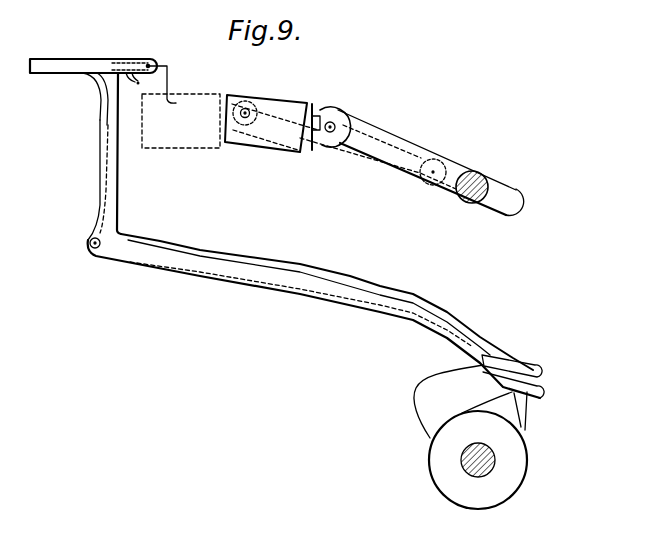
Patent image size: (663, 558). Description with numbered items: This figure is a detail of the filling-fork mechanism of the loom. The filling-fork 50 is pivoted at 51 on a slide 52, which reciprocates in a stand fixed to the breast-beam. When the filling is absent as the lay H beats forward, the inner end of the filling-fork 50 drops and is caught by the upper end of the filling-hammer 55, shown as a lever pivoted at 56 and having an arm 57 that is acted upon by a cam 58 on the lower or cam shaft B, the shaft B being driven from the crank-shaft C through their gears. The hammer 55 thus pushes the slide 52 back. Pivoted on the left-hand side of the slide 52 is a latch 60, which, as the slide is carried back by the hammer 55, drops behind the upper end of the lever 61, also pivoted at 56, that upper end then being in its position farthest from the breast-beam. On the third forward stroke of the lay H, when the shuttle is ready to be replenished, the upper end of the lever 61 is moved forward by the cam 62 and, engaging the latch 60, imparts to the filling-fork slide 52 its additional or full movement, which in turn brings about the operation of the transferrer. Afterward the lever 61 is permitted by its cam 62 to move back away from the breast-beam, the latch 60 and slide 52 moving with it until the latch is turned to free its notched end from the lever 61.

The latch 60 is at (87, 58).
The slide 52 is at (142, 60).
The pivot 51 is at (150, 65).
The filling-fork 50 is at (168, 88).
The lever 61 is at (101, 92).
The filling-hammer 55 is at (101, 160).
The pivot 56 is at (90, 244).
The arm 57 is at (419, 319).
The cam 58 is at (510, 412).
The cam 62 is at (416, 403).
The cam shaft B is at (461, 461).
The lay H is at (275, 106).
The crank-shaft C is at (483, 178).